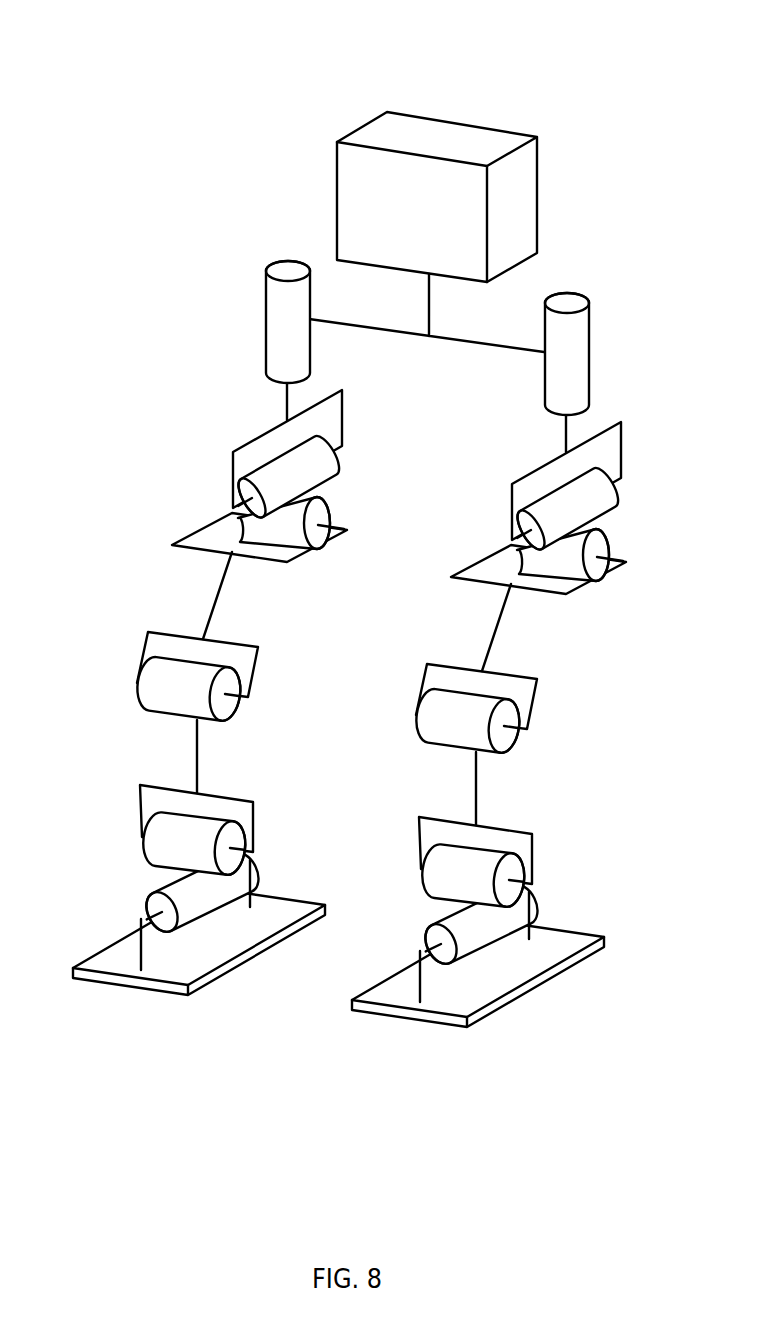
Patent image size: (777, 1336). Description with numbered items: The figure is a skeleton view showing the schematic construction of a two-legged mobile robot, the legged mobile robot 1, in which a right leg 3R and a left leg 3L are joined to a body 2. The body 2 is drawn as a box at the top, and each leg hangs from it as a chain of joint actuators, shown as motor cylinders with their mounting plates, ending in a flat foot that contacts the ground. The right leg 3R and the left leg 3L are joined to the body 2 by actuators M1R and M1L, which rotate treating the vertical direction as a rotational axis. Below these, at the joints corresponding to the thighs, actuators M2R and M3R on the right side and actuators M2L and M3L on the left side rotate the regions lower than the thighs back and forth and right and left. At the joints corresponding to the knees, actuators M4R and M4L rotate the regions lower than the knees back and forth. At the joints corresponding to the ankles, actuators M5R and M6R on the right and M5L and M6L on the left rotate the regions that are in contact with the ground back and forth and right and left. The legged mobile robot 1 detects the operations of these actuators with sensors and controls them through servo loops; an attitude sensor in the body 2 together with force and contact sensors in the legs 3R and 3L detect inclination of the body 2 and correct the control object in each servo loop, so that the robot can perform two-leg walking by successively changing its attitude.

The legged mobile robot 1 is at (75, 36).
The body 2 is at (487, 100).
The right leg 3R is at (214, 683).
The left leg 3L is at (509, 718).
The actuator M1R is at (271, 348).
The actuator M1L is at (583, 350).
The actuator M2R is at (333, 458).
The actuator M2L is at (612, 493).
The actuator M3R is at (327, 517).
The actuator M3L is at (607, 548).
The actuator M4R is at (228, 707).
The actuator M4L is at (508, 750).
The actuator M5R is at (232, 857).
The actuator M5L is at (512, 887).
The actuator M6R is at (252, 880).
The actuator M6L is at (520, 913).